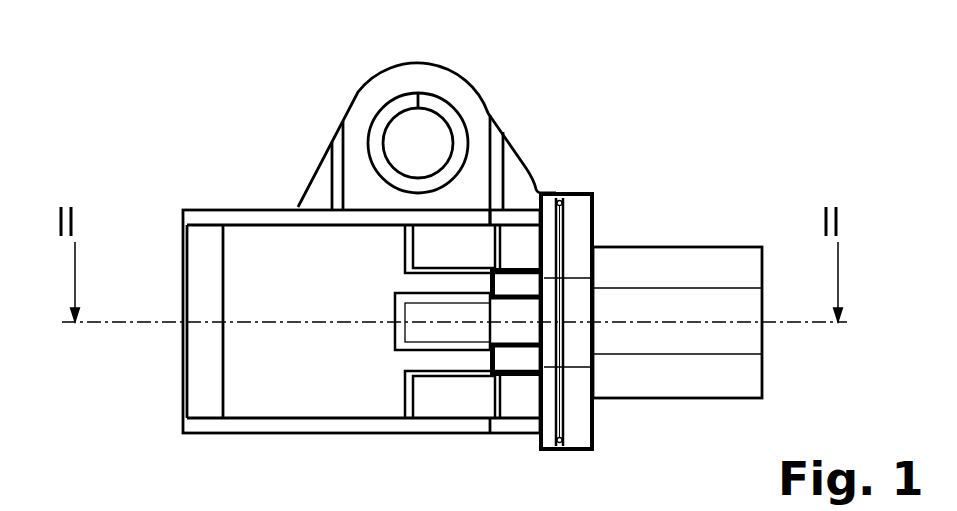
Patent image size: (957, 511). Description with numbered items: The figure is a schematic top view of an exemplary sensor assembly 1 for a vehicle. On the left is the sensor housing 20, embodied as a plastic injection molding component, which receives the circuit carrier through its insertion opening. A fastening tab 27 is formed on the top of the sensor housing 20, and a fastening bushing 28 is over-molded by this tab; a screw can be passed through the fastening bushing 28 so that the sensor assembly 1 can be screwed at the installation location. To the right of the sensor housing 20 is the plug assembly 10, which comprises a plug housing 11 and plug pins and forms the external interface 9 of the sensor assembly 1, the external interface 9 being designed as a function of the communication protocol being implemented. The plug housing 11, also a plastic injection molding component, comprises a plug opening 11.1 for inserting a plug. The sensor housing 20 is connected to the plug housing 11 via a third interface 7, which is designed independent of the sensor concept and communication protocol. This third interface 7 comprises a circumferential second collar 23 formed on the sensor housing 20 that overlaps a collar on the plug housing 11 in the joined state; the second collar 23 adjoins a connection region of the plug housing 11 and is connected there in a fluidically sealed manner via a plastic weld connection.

The sensor assembly 1 is at (109, 113).
The sensor housing 20 is at (291, 141).
The fastening tab 27 is at (453, 90).
The fastening bushing 28 is at (385, 120).
The third interface 7 is at (584, 157).
The circumferential second collar 23 is at (560, 410).
The plug assembly 10 is at (751, 189).
The plug housing 11 is at (742, 275).
The plug opening 11.1 is at (763, 340).
The external interface 9 is at (800, 376).